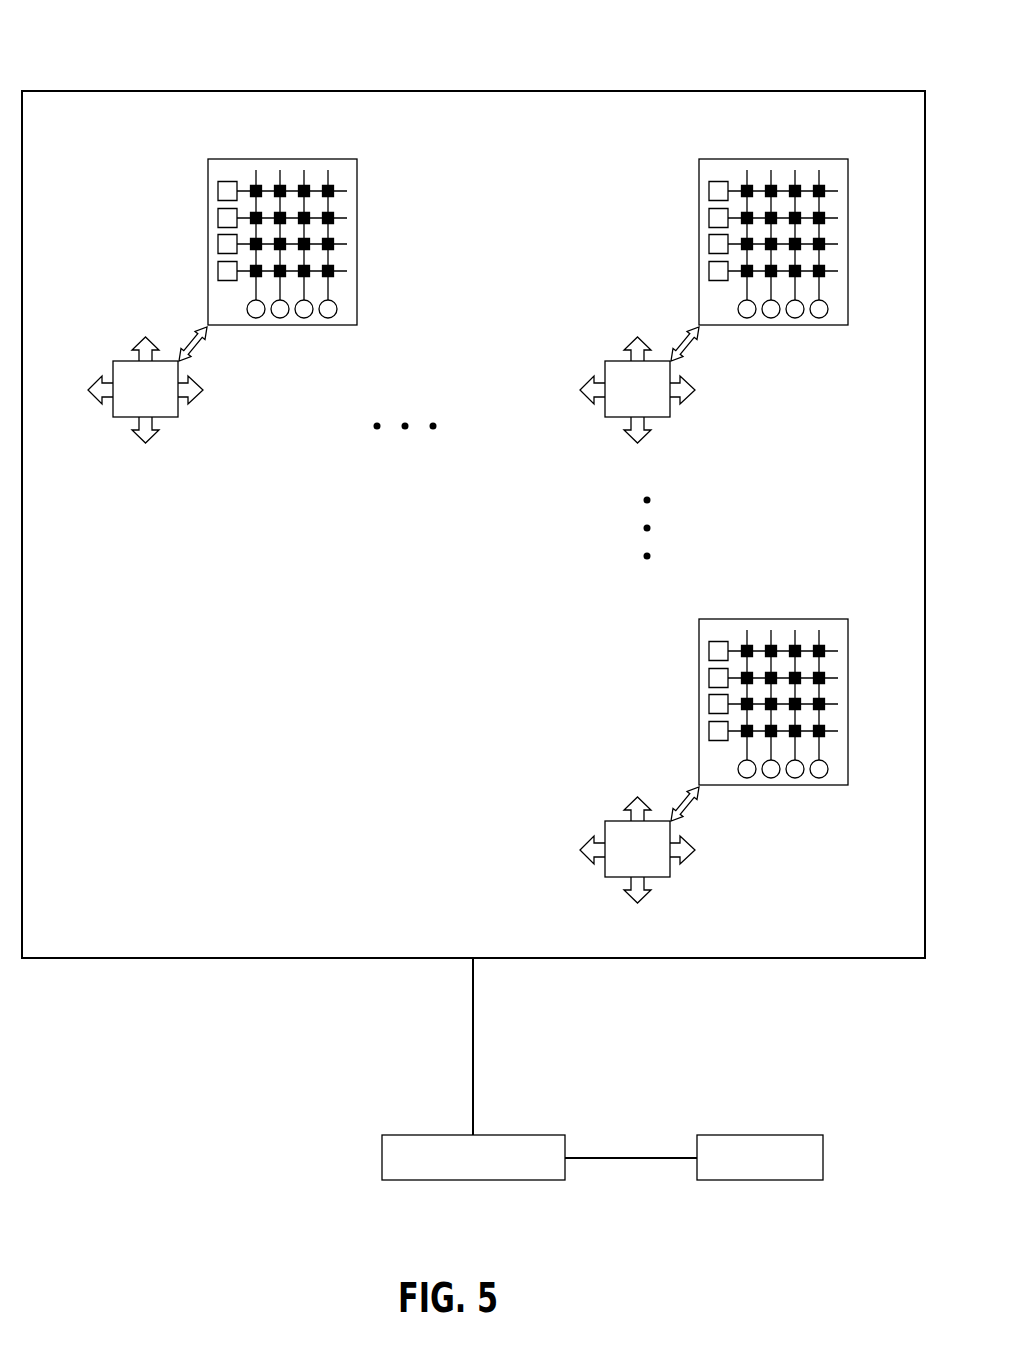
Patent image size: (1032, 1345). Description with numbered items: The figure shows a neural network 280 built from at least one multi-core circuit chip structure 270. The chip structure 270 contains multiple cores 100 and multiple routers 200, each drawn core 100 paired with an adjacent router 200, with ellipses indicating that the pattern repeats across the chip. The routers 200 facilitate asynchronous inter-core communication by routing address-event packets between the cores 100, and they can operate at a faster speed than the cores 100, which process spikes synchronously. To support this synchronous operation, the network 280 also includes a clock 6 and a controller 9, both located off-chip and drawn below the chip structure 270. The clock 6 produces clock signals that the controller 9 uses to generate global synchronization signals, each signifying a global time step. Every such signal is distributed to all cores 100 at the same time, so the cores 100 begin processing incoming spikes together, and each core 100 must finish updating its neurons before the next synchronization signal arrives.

The neural network 280 is at (423, 31).
The multi-core circuit chip structure 270 is at (160, 91).
The core 100 is at (357, 232).
The router 200 is at (661, 390).
The controller 9 is at (538, 1181).
The clock 6 is at (792, 1181).